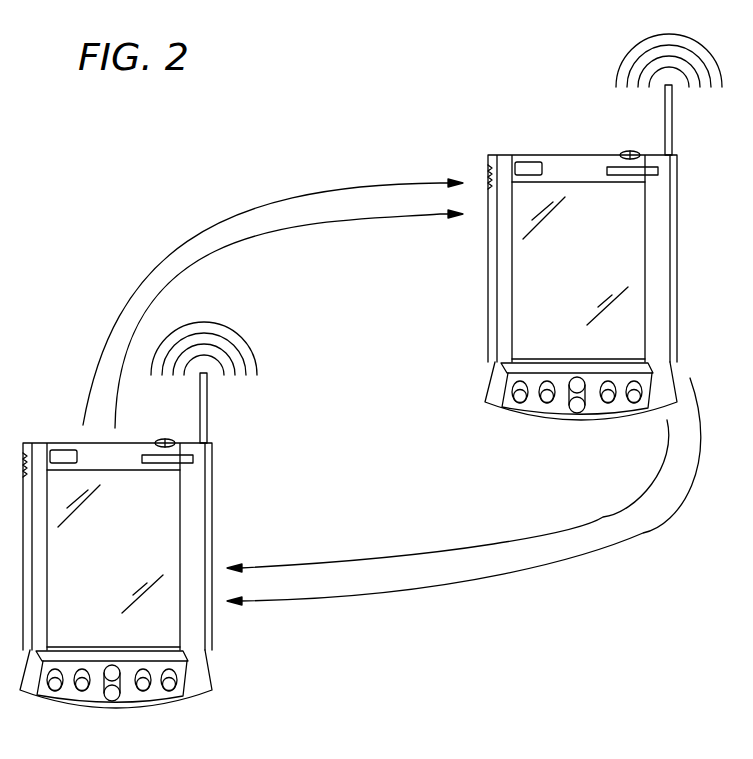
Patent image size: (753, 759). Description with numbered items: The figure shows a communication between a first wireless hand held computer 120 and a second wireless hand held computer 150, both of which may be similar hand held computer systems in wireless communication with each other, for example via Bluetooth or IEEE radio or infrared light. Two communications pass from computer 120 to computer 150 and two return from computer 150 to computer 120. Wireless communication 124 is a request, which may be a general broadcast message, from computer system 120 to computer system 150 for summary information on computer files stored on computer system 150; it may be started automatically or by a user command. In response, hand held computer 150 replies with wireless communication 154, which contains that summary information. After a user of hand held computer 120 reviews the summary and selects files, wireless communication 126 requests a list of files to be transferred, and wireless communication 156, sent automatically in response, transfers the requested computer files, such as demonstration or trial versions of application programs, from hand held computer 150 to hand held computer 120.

The first wireless hand held computer 120 is at (126, 553).
The second wireless hand held computer 150 is at (594, 287).
The wireless communication 124 is at (268, 236).
The wireless communication 126 is at (213, 230).
The wireless communication 154 is at (420, 557).
The wireless communication 156 is at (477, 577).